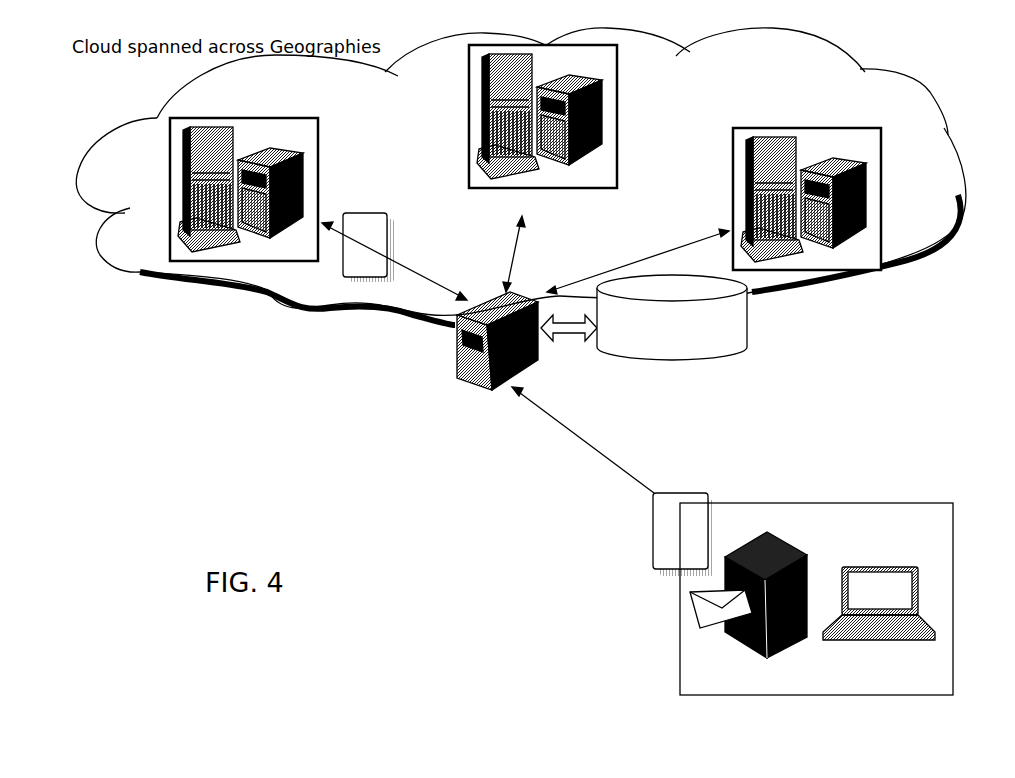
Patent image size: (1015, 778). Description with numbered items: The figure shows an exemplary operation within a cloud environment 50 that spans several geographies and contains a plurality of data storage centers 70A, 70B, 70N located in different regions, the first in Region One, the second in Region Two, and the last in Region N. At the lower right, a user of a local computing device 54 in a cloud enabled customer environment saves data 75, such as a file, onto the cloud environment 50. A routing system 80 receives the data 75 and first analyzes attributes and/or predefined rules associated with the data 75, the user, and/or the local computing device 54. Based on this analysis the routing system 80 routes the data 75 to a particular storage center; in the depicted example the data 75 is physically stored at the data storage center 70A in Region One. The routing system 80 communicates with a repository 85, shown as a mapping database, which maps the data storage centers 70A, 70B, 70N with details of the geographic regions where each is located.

The cloud environment 50 is at (130, 272).
The local computing device 54 is at (698, 695).
The data storage center 70A is at (319, 154).
The data storage center 70B is at (527, 42).
The data storage center 70N is at (888, 144).
The data 75 is at (350, 271).
The routing system 80 is at (475, 392).
The repository 85 is at (677, 362).